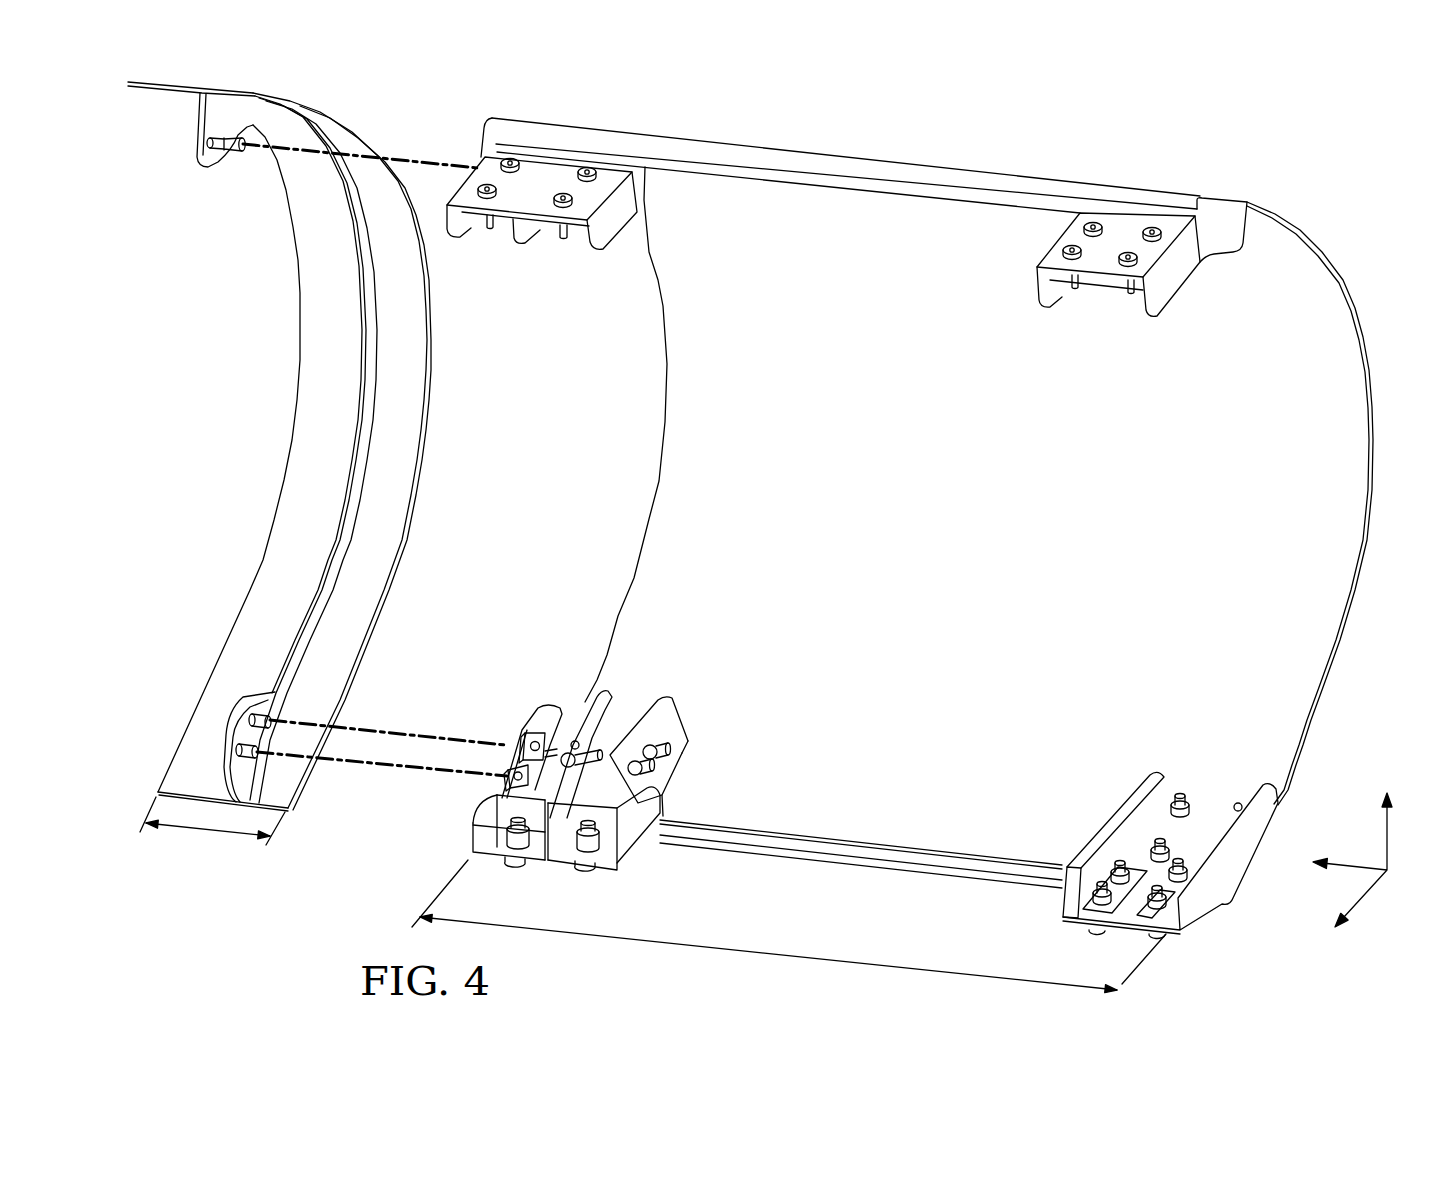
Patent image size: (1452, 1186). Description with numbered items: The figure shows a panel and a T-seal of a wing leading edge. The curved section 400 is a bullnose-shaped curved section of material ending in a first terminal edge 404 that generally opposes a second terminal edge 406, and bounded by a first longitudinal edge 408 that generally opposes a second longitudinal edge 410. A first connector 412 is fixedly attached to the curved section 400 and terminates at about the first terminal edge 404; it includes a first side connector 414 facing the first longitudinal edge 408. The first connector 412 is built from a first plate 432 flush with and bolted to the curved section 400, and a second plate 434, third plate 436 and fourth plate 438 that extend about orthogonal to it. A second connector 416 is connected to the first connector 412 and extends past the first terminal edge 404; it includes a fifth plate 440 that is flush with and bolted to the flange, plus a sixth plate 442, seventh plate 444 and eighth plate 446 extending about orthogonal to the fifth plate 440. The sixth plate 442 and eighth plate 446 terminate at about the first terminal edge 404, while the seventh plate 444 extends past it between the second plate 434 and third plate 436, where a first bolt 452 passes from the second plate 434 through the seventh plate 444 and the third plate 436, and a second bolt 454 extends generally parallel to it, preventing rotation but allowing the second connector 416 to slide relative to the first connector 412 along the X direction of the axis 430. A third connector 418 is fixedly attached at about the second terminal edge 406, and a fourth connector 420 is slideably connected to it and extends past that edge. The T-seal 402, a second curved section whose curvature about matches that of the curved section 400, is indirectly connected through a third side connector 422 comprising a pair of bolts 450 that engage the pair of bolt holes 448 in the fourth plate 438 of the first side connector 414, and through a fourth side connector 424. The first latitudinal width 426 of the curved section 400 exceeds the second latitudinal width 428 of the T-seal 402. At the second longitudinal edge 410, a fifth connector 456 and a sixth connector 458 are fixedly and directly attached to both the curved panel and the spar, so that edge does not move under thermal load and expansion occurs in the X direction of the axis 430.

The curved section 400 is at (966, 556).
The T-seal 402 is at (307, 486).
The first terminal edge 404 is at (877, 868).
The second terminal edge 406 is at (845, 187).
The first longitudinal edge 408 is at (655, 492).
The second longitudinal edge 410 is at (1372, 378).
The first connector 412 is at (687, 757).
The first side connector 414 is at (587, 761).
The second connector 416 is at (550, 861).
The third connector 418 is at (658, 211).
The fourth connector 420 is at (443, 190).
The third side connector 422 is at (228, 710).
The fourth side connector 424 is at (220, 160).
The first latitudinal width 426 is at (767, 951).
The second latitudinal width 428 is at (205, 833).
The axis 430 is at (1383, 907).
The first plate 432 is at (683, 762).
The second plate 434 is at (685, 713).
The third plate 436 is at (604, 692).
The fourth plate 438 is at (548, 708).
The fifth plate 440 is at (497, 861).
The sixth plate 442 is at (623, 846).
The seventh plate 444 is at (558, 838).
The eighth plate 446 is at (473, 826).
The pair of bolt holes 448 is at (528, 732).
The pair of bolts 450 is at (243, 757).
The first bolt 452 is at (613, 727).
The second bolt 454 is at (573, 725).
The fifth connector 456 is at (1113, 820).
The sixth connector 458 is at (1229, 212).